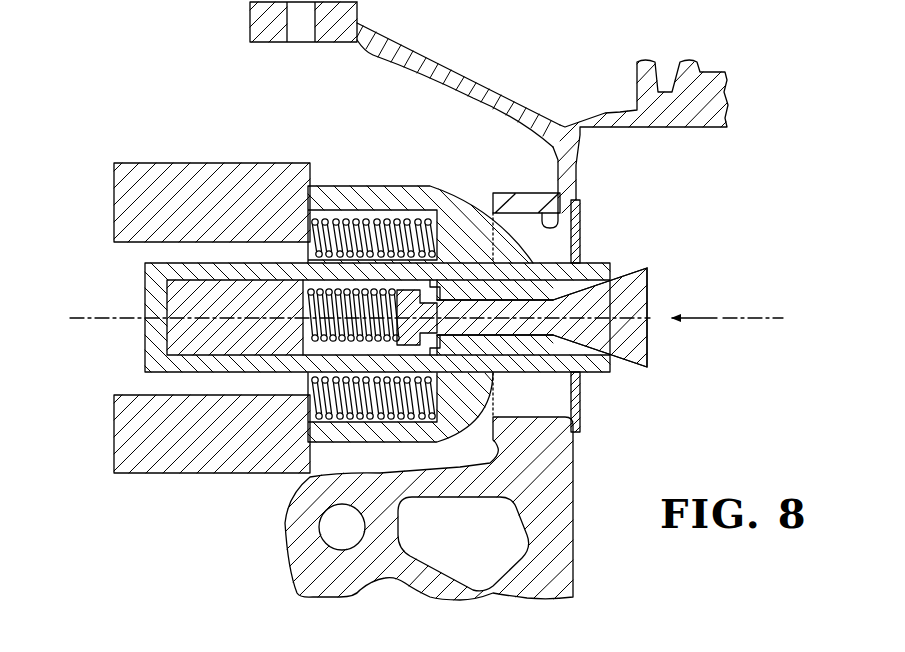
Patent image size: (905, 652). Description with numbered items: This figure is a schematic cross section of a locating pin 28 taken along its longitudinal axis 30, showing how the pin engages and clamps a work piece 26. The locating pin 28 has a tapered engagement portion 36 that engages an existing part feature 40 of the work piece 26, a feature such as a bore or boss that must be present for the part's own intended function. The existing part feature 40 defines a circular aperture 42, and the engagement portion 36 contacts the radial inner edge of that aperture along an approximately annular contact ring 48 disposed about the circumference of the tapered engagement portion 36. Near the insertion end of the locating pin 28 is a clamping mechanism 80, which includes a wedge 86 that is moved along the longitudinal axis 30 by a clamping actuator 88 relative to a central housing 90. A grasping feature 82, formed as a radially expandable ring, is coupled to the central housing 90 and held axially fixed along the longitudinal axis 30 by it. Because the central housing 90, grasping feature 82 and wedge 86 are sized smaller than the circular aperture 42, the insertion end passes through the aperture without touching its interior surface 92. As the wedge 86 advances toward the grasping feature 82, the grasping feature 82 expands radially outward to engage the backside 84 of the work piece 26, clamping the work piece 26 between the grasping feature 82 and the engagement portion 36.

The work piece 26 is at (465, 78).
The locating pin 28 is at (200, 138).
The longitudinal axis 30 is at (740, 317).
The engagement portion 36 is at (457, 185).
The existing part feature 40 is at (562, 150).
The circular aperture 42 is at (461, 521).
The annular contact ring 48 is at (507, 383).
The clamping mechanism 80 is at (646, 304).
The grasping feature 82 is at (582, 212).
The backside 84 is at (571, 440).
The wedge 86 is at (628, 268).
The clamping actuator 88 is at (130, 306).
The central housing 90 is at (541, 262).
The interior surface 92 is at (530, 407).